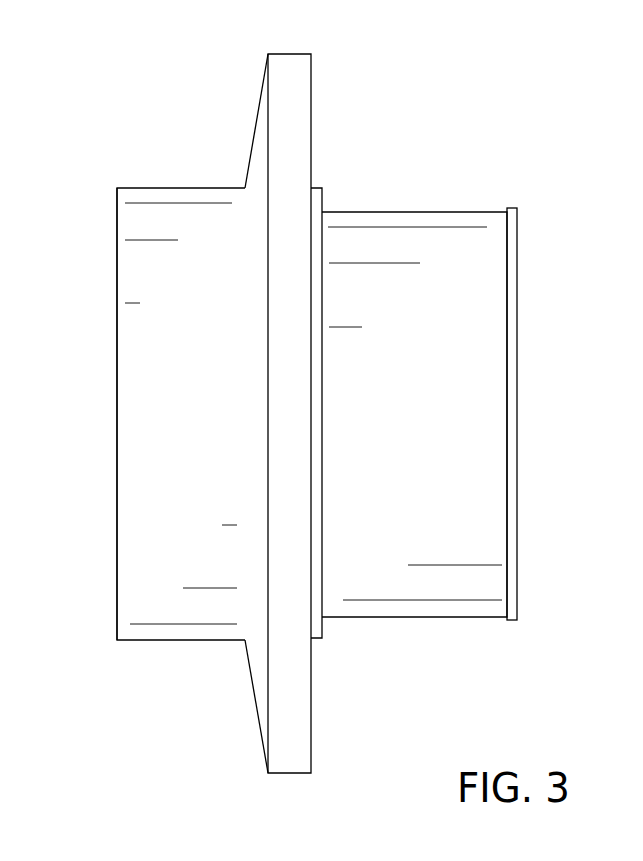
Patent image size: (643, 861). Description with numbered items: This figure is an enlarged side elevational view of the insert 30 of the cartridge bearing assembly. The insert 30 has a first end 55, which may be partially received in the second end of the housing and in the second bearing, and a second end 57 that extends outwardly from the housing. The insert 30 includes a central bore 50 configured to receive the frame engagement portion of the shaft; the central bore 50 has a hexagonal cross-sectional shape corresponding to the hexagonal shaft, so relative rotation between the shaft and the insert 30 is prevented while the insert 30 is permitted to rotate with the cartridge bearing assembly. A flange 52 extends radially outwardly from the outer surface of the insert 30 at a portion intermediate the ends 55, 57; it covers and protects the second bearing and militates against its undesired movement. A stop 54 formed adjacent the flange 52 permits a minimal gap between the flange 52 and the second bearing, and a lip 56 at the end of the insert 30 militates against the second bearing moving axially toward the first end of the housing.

The insert 30 is at (535, 68).
The central bore 50 is at (117, 320).
The flange 52 is at (311, 108).
The stop 54 is at (314, 640).
The first end 55 is at (517, 418).
The lip 56 is at (512, 621).
The second end 57 is at (117, 465).